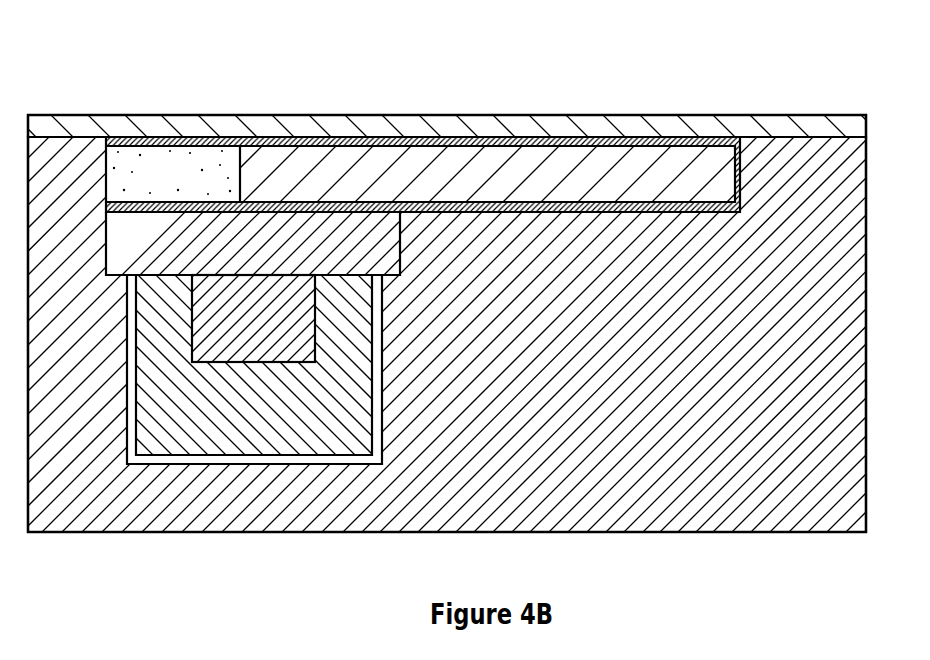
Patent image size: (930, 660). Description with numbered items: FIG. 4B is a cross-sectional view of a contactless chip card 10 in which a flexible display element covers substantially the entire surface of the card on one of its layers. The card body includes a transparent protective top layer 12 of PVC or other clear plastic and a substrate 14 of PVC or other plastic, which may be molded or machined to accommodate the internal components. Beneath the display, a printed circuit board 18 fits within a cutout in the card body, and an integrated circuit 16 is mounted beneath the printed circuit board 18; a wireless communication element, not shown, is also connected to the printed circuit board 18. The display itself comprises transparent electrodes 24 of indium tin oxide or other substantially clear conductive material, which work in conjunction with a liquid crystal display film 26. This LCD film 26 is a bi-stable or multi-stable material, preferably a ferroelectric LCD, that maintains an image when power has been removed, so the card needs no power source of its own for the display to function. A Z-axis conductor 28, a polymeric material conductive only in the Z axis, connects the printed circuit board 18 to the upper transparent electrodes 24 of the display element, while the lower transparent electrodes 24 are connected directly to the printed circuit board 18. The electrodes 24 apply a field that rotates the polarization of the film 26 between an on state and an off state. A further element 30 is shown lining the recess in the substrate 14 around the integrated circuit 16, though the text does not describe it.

The semiconductor device 10 is at (133, 65).
The transparent protective top layer 12 is at (533, 124).
The substrate 14 is at (687, 465).
The integrated circuit 16 is at (264, 331).
The printed circuit board 18 is at (247, 256).
The transparent electrodes 24 is at (740, 203).
The liquid crystal display film 26 is at (606, 188).
The Z-axis conductor 28 is at (183, 186).
The liner 30 is at (262, 433).